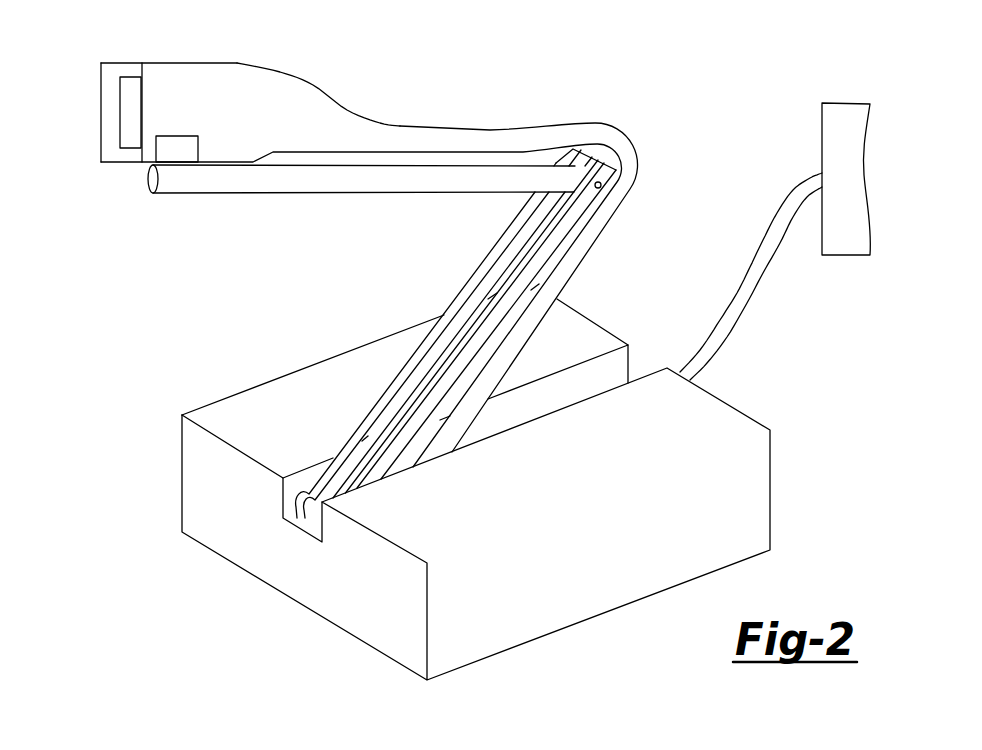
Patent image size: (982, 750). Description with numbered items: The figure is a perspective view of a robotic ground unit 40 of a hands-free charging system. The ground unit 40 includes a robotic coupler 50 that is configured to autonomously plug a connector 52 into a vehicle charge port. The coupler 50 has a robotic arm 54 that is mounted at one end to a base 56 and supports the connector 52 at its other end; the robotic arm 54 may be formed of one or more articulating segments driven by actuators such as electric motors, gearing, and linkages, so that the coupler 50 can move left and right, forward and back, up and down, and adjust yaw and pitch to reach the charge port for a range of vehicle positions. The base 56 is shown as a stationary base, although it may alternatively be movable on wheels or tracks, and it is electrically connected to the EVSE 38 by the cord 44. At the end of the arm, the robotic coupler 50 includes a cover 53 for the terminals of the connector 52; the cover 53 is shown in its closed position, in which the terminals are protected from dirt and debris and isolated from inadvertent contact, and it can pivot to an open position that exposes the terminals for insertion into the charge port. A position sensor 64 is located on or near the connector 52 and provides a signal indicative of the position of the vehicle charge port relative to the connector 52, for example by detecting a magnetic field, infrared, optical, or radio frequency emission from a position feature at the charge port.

The EVSE 38 is at (853, 146).
The ground unit 40 is at (651, 85).
The cord 44 is at (777, 213).
The robotic coupler 50 is at (309, 72).
The connector 52 is at (133, 88).
The cover 53 is at (107, 134).
The robotic arm 54 is at (327, 180).
The base 56 is at (243, 540).
The position sensor 64 is at (180, 130).